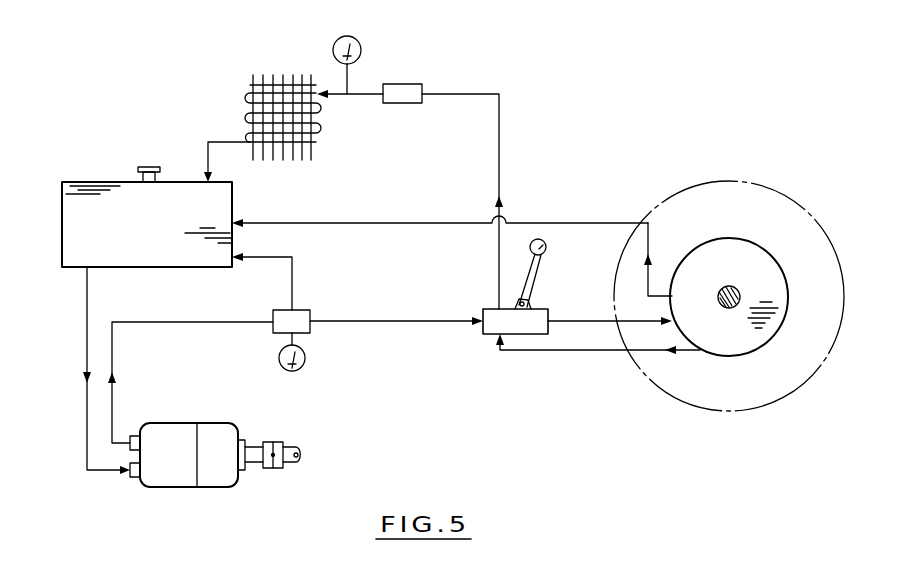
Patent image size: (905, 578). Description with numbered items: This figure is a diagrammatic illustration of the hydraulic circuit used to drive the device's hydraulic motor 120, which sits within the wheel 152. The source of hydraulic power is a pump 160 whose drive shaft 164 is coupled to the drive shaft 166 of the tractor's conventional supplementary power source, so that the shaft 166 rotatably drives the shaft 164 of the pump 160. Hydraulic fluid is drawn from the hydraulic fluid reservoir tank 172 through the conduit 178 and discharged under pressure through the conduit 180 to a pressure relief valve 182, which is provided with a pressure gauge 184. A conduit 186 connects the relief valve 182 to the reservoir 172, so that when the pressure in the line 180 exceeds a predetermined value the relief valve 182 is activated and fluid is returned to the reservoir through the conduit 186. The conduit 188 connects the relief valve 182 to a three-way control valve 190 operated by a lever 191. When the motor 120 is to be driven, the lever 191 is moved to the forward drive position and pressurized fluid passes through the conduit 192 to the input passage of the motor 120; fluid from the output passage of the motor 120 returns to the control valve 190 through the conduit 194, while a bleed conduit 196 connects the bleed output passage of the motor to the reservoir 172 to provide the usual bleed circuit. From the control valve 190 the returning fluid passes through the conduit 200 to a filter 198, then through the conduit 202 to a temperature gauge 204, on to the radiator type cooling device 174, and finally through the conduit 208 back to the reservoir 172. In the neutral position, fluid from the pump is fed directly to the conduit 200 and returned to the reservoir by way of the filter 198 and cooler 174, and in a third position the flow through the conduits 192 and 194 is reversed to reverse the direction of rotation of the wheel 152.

The hydraulic motor 120 is at (729, 244).
The tire 152 is at (728, 180).
The pump 160 is at (190, 478).
The drive shaft 164 is at (253, 448).
The drive shaft 166 is at (292, 450).
The hydraulic fluid reservoir tank 172 is at (97, 187).
The radiator type cooling device 174 is at (250, 83).
The conduit 178 is at (85, 340).
The conduit 180 is at (197, 324).
The pressure relief valve 182 is at (300, 312).
The pressure gauge 184 is at (306, 357).
The conduit 186 is at (293, 270).
The conduit 188 is at (426, 324).
The three-way control valve 190 is at (537, 318).
The lever 191 is at (547, 246).
The conduit 192 is at (635, 320).
The conduit 194 is at (560, 350).
The bleed conduit 196 is at (392, 222).
The filter 198 is at (402, 86).
The conduit 200 is at (501, 132).
The conduit 202 is at (366, 96).
The temperature gauge 204 is at (358, 41).
The conduit 208 is at (222, 142).